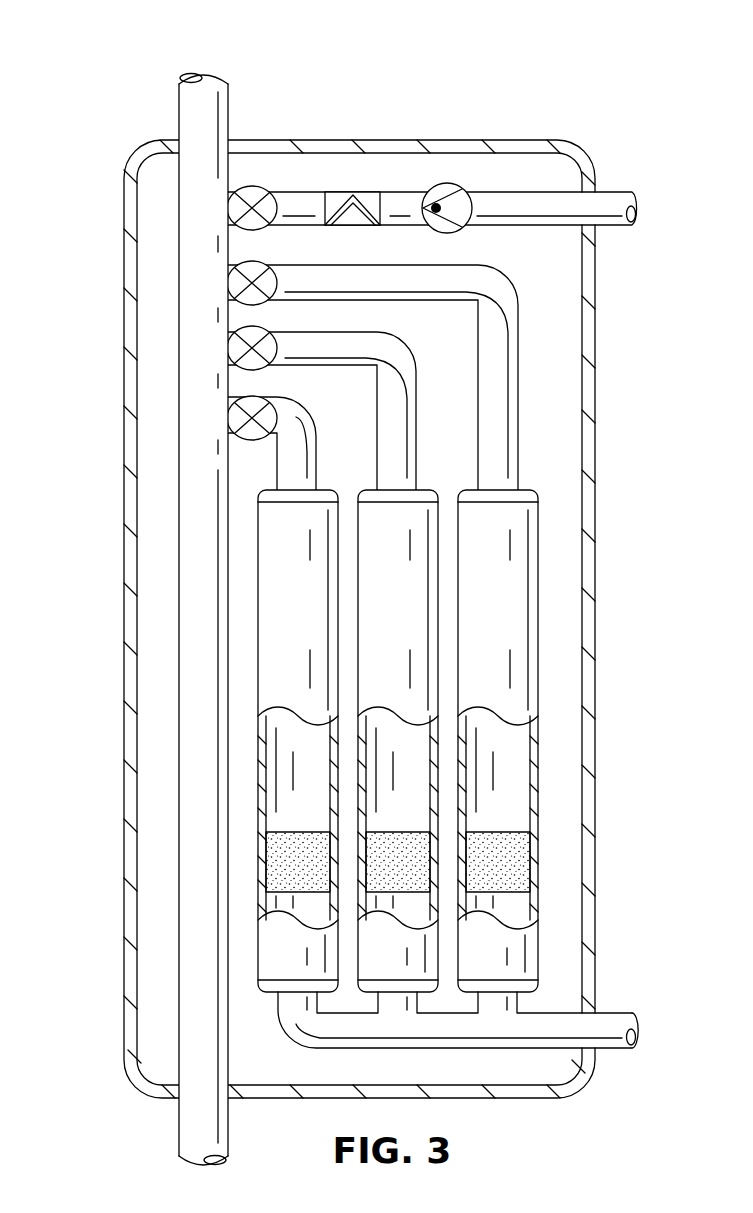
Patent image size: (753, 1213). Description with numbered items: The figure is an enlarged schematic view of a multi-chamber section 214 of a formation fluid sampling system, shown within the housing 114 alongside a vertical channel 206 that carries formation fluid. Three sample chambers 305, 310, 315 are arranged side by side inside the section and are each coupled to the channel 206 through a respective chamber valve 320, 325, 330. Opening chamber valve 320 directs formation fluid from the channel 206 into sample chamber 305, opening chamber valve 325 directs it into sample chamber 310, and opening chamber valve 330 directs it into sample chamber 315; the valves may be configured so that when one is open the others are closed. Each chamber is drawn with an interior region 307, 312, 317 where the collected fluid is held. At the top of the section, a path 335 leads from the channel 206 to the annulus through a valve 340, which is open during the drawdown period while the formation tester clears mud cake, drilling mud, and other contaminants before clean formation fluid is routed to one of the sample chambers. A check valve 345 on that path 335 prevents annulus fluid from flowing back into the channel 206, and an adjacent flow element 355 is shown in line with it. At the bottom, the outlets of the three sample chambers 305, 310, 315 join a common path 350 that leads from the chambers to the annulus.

The multi-chamber section 214 is at (599, 71).
The enclosure housing 114 is at (596, 431).
The channel 206 is at (178, 585).
The valve 340 is at (252, 188).
The check valve 355 is at (358, 190).
The check valve 345 is at (443, 188).
The path 335 is at (612, 191).
The chamber valve 330 is at (255, 262).
The chamber valve 325 is at (255, 330).
The chamber valve 320 is at (255, 400).
The sample chamber 305 is at (298, 741).
The sample chamber 310 is at (398, 741).
The sample chamber 315 is at (498, 741).
The filter media 307 is at (278, 877).
The filter media 312 is at (378, 877).
The filter media 317 is at (478, 877).
The path 350 is at (612, 1050).